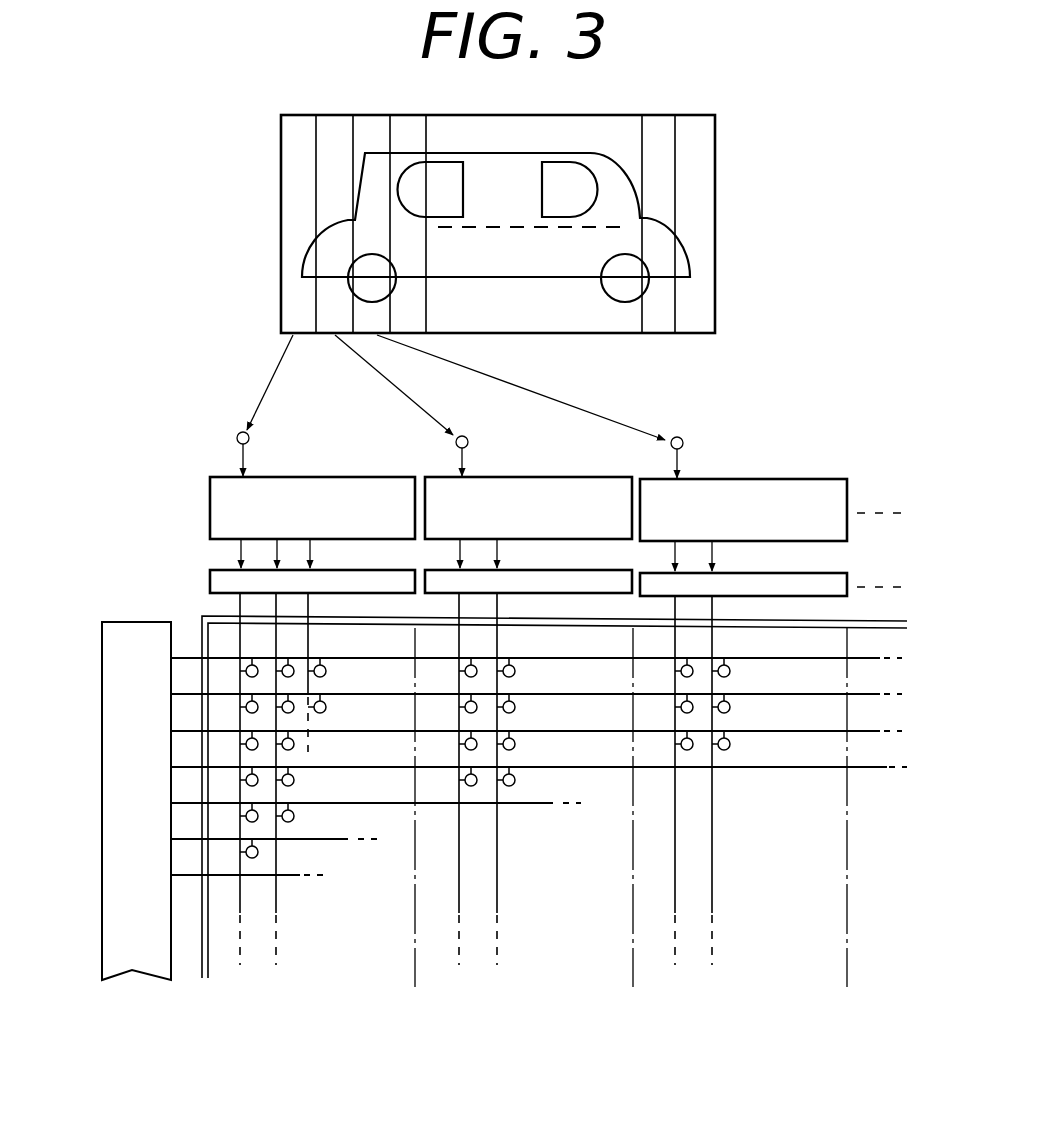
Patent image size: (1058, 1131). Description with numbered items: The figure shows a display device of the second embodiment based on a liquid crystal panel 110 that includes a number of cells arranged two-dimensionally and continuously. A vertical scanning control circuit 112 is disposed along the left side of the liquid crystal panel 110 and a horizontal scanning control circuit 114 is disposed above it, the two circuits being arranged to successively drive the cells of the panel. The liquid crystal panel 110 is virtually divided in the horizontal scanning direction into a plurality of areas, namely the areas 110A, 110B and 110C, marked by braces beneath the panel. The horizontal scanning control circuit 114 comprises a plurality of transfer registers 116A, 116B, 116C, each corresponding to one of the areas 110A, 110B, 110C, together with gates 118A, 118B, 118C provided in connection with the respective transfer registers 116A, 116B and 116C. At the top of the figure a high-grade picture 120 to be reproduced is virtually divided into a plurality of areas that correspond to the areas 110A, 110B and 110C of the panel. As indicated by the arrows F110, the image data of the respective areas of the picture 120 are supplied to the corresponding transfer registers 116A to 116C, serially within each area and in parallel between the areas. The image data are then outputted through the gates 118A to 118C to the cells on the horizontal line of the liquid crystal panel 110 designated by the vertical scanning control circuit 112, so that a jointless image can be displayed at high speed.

The high-grade picture 120 is at (715, 316).
The arrows F110 is at (450, 392).
The horizontal scanning control circuit 114 is at (511, 510).
The transfer register 116A is at (302, 490).
The transfer register 116B is at (500, 490).
The transfer register 116C is at (740, 497).
The gate 118A is at (218, 583).
The gate 118B is at (527, 583).
The gate 118C is at (828, 583).
The vertical scanning control circuit 112 is at (118, 823).
The liquid crystal panel 110 is at (549, 821).
The area 110A is at (412, 992).
The area 110B is at (632, 992).
The area 110C is at (742, 823).